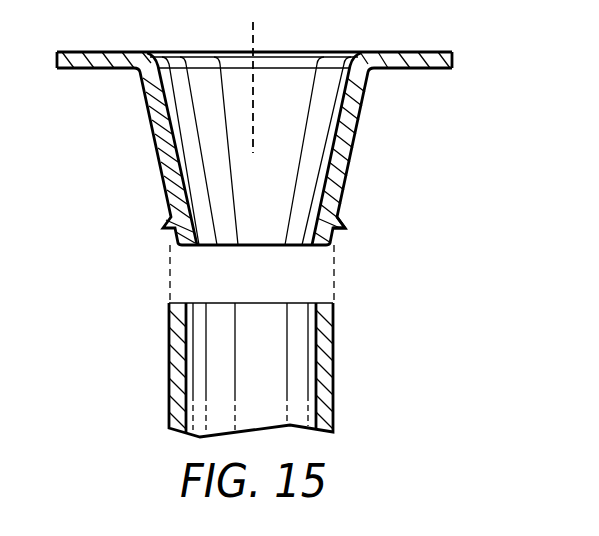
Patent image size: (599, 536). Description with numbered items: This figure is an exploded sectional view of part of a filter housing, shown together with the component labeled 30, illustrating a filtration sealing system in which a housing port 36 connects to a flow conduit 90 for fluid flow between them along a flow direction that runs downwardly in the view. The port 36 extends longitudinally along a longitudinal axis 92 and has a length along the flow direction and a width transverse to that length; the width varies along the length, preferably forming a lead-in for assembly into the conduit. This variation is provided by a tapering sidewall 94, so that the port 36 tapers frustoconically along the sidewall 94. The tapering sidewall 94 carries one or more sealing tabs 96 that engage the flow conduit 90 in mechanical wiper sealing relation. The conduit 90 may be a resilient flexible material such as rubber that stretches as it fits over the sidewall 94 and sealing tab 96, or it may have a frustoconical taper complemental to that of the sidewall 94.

The fitting body 30 is at (90, 68).
The housing port 36 is at (157, 149).
The flow conduit 90 is at (168, 369).
The longitudinal axis 92 is at (256, 38).
The tapering sidewall 94 is at (340, 141).
The sealing tab 96 is at (343, 221).